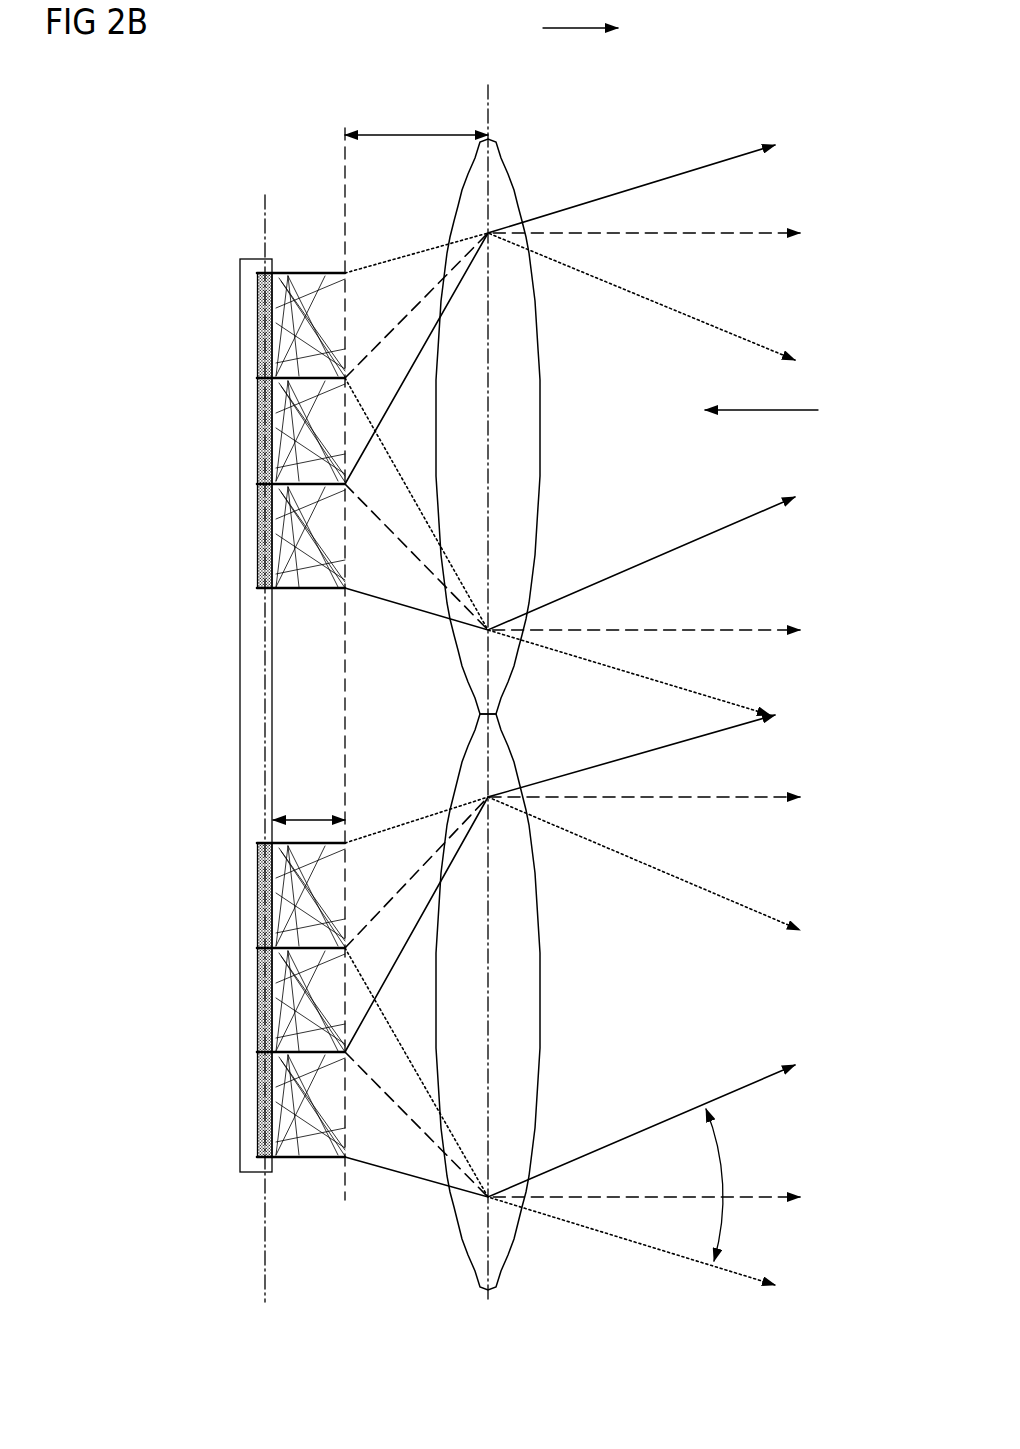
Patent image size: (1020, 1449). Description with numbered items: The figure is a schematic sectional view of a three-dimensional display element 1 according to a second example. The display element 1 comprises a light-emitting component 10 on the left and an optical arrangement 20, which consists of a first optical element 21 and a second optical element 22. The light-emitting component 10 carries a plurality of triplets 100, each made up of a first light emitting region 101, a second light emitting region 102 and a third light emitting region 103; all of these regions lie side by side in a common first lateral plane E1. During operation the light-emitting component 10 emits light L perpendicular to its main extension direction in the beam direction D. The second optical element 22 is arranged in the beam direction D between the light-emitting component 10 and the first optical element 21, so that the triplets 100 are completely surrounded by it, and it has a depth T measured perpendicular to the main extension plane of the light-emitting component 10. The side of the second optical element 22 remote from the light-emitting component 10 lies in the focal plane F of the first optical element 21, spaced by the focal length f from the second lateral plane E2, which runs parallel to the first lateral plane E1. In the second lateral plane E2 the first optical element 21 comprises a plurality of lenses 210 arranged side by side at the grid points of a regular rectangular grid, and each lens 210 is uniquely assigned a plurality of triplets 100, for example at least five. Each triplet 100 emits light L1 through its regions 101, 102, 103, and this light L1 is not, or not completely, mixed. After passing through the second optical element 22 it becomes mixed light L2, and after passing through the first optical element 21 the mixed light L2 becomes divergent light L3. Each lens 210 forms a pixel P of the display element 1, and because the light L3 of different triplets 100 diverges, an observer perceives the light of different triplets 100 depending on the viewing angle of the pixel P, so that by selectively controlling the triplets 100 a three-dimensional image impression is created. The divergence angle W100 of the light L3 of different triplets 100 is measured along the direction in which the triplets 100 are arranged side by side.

The 3D display element 1 is at (572, 158).
The light-emitting component 10 is at (243, 706).
The optical arrangement 20 is at (425, 664).
The first optical element 21 is at (451, 664).
The second optical element 22 is at (322, 268).
The triplet 100 is at (220, 715).
The first light emitting region 101 is at (262, 298).
The second light emitting region 102 is at (262, 338).
The third light emitting region 103 is at (219, 365).
The lens 210 is at (525, 498).
The divergence angle W100 is at (728, 1165).
The first lateral plane E1 is at (263, 205).
The second lateral plane E2 is at (490, 90).
The focal plane F is at (348, 186).
The focal length f is at (416, 119).
The depth T is at (309, 804).
The beam direction D is at (580, 14).
The pixel P is at (761, 394).
The light L is at (565, 1318).
The light of the regions L1 is at (296, 1158).
The mixed light L2 is at (407, 1177).
The divergent light L3 is at (597, 1230).